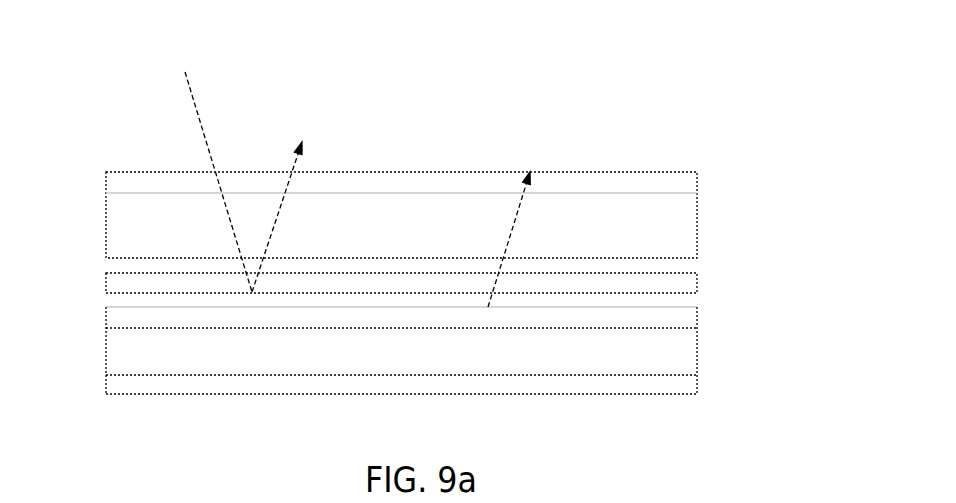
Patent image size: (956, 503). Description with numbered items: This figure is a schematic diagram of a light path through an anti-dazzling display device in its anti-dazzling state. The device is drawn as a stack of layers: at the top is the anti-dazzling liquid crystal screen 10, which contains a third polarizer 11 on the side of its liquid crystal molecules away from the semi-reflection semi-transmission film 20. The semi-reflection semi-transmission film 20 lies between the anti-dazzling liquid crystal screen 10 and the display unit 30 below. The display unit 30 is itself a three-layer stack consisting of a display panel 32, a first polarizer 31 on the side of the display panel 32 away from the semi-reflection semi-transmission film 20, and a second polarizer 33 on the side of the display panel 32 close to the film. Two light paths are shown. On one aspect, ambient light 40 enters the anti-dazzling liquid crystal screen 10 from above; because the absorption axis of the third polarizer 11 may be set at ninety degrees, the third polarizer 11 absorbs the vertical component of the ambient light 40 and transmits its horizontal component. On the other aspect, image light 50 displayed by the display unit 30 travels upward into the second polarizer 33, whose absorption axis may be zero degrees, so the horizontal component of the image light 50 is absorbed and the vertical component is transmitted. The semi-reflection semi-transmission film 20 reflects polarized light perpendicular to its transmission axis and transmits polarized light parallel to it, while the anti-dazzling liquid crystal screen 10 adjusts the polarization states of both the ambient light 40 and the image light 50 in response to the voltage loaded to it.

The anti-dazzling liquid crystal screen 10 is at (674, 230).
The third polarizer 11 is at (673, 186).
The semi-reflection semi-transmission film 20 is at (678, 285).
The display unit 30 is at (439, 322).
The first polarizer 31 is at (679, 393).
The display panel 32 is at (677, 365).
The second polarizer 33 is at (675, 319).
The ambient light 40 is at (234, 166).
The image light 50 is at (504, 252).